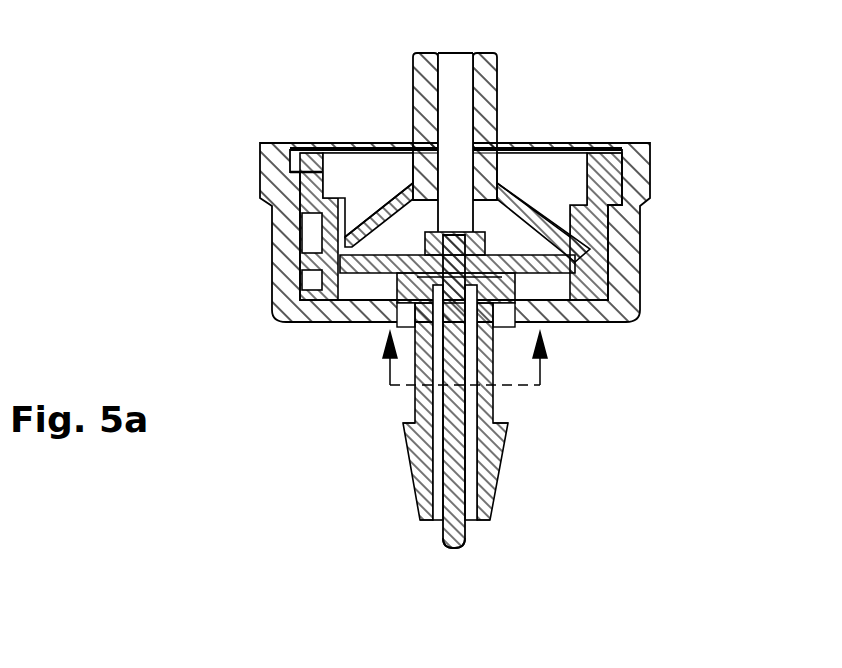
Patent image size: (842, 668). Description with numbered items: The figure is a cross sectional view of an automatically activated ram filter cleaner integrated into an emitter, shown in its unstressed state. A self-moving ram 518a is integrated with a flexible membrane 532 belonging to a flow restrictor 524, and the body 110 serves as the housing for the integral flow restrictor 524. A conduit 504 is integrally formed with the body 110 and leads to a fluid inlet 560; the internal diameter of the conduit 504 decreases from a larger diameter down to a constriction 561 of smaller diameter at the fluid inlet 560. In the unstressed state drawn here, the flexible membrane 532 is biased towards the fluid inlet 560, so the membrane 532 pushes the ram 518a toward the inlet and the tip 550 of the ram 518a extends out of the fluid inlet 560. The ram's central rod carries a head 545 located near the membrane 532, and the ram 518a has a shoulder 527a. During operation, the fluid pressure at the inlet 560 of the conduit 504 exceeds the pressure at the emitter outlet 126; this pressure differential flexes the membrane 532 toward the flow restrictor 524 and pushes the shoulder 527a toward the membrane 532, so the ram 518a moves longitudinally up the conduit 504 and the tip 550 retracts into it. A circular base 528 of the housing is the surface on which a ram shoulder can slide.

The body 110 is at (640, 238).
The emitter outlet 126 is at (458, 45).
The flow restrictor 524 is at (435, 283).
The flexible membrane 532 is at (425, 290).
The circular base 528 is at (428, 290).
The shoulder 527a is at (473, 290).
The head 545 is at (455, 278).
The conduit 504 is at (492, 392).
The self-moving ram 518a is at (468, 403).
The fluid inlet 560 is at (443, 518).
The constriction 561 is at (473, 518).
The tip 550 is at (455, 551).